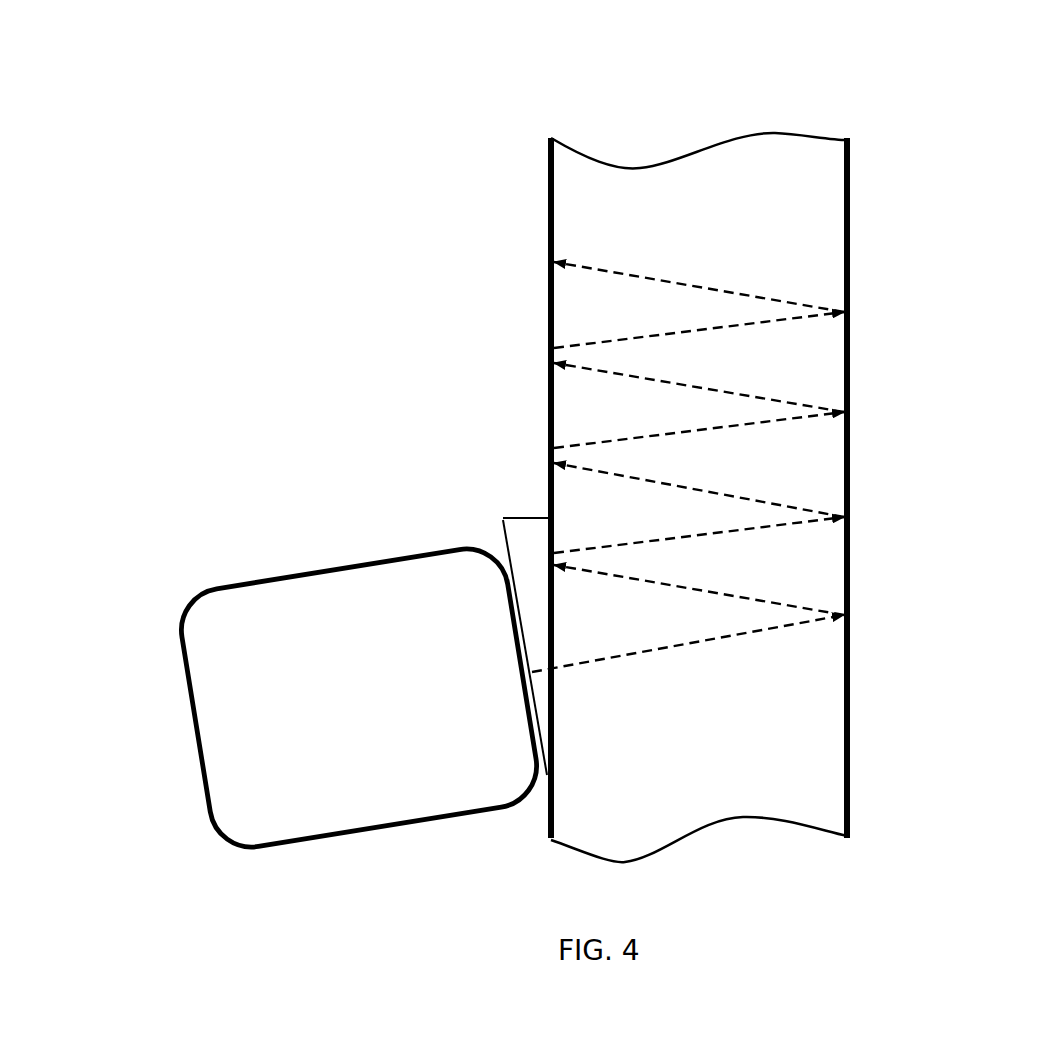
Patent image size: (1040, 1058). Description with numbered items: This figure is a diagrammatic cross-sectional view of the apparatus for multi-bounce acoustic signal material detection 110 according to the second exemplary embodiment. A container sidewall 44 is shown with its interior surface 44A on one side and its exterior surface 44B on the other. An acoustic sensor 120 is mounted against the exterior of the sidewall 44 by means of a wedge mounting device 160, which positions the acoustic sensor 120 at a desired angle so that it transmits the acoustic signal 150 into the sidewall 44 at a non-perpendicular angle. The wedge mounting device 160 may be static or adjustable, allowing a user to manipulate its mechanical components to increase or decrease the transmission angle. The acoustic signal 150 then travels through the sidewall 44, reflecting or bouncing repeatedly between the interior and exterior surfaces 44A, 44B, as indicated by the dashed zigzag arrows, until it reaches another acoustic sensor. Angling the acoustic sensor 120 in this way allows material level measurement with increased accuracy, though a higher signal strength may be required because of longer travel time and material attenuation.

The apparatus for multi-bounce acoustic signal material detection 110 is at (325, 147).
The sidewall 44 is at (727, 451).
The interior surface 44A is at (855, 231).
The exterior surface 44B is at (546, 310).
The acoustic signal 150 is at (729, 651).
The wedge mounting device 160 is at (520, 530).
The acoustic sensor 120 is at (280, 588).